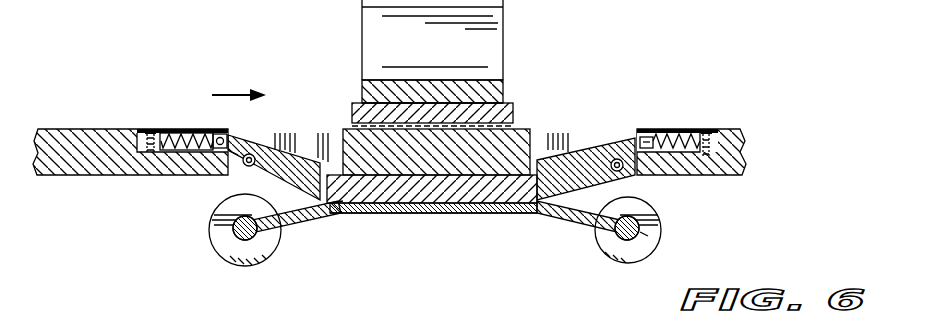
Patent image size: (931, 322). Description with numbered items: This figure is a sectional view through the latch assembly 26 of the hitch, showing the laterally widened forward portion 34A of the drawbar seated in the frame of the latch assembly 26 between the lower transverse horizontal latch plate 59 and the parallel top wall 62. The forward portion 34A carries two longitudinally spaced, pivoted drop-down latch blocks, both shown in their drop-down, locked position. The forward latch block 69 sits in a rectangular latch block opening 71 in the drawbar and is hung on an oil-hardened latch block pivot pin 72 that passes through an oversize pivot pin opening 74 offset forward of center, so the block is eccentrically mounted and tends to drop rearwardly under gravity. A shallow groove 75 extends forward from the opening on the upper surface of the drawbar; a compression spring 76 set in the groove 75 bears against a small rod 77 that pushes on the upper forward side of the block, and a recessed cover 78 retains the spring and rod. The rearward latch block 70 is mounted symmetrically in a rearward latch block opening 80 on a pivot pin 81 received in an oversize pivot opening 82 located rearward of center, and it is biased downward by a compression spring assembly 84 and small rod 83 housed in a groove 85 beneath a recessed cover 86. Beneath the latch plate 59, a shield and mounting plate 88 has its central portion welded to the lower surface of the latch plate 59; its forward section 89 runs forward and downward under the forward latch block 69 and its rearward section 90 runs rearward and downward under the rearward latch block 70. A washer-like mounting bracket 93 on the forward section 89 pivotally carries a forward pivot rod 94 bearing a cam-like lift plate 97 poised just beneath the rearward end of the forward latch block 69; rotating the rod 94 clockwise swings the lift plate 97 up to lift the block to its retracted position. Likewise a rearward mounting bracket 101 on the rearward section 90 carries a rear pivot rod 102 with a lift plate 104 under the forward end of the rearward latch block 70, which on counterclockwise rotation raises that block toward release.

The forward portion of drawbar 34A is at (65, 128).
The latch assembly 26 is at (420, 230).
The latch plate 59 is at (506, 183).
The top wall 62 is at (518, 117).
The forward latch block 69 is at (576, 158).
The rearward latch block 70 is at (291, 153).
The latch block opening 71 is at (553, 130).
The latch block pivot pin 72 is at (648, 167).
The pivot pin opening 74 is at (640, 182).
The groove 75 is at (692, 178).
The compression spring 76 is at (686, 132).
The small rod 77 is at (653, 133).
The recessed cover 78 is at (641, 130).
The rearward latch block opening 80 is at (327, 128).
The pivot pin 81 is at (240, 163).
The pivot opening 82 is at (238, 174).
The small rod 83 is at (222, 125).
The compression spring assembly 84 is at (186, 130).
The groove 85 is at (167, 158).
The recessed cover 86 is at (160, 128).
The shield and mounting plate 88 is at (468, 226).
The forward section 89 is at (607, 257).
The rearward section 90 is at (328, 223).
The mounting bracket 93 is at (650, 263).
The forward pivot rod 94 is at (643, 233).
The lift plate 97 is at (577, 218).
The rearward mounting bracket 101 is at (213, 236).
The rear pivot rod 102 is at (240, 234).
The lift plate 104 is at (300, 232).